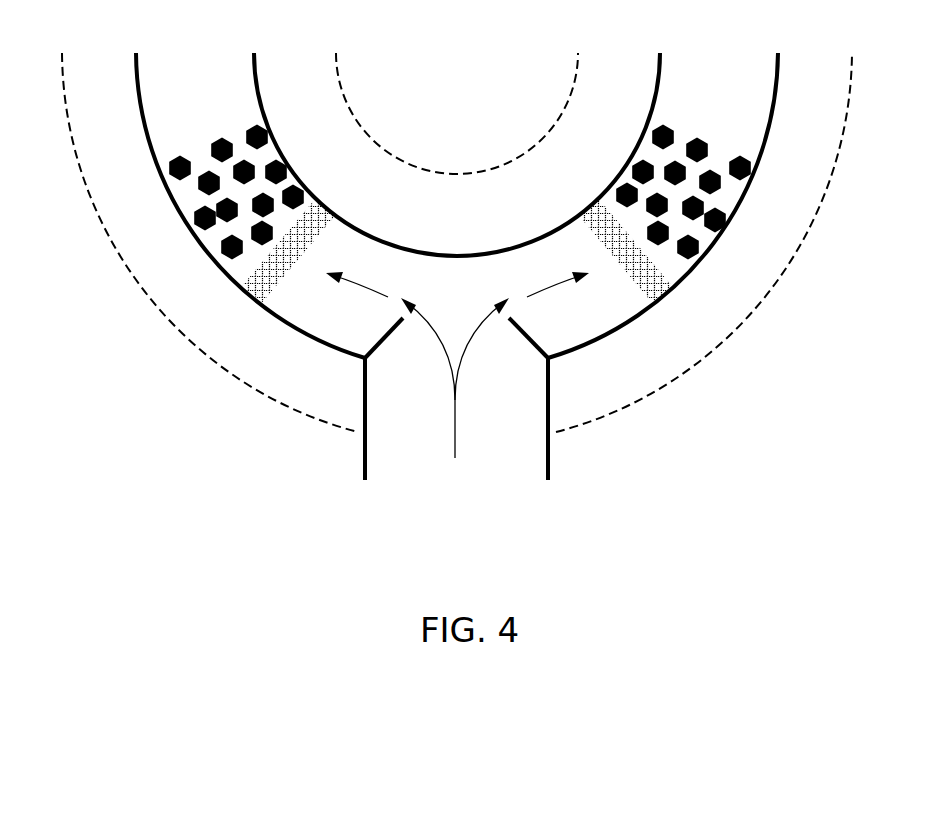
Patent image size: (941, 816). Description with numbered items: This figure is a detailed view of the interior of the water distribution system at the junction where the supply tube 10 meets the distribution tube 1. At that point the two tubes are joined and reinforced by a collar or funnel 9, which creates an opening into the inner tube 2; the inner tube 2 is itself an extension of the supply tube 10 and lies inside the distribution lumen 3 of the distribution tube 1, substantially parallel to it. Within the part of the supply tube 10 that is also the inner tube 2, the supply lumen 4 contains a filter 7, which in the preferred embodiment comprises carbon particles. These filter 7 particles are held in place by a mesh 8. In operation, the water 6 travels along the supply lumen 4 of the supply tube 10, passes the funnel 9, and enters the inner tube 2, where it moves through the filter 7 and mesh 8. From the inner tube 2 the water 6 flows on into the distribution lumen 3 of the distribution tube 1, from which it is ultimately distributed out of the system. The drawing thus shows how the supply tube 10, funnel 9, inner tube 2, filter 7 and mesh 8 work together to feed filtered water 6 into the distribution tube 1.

The distribution tube 1 is at (573, 73).
The inner tube 2 is at (770, 132).
The distribution lumen 3 is at (553, 183).
The supply lumen 4 is at (728, 192).
The water 6 is at (455, 442).
The filter 7 is at (163, 180).
The mesh 8 is at (317, 210).
The funnel 9 is at (533, 340).
The supply tube 10 is at (552, 455).